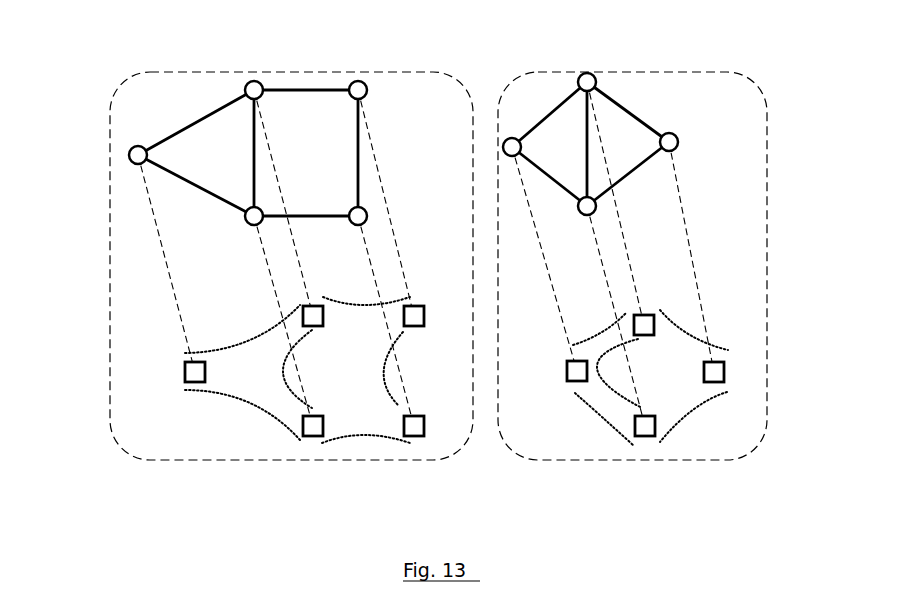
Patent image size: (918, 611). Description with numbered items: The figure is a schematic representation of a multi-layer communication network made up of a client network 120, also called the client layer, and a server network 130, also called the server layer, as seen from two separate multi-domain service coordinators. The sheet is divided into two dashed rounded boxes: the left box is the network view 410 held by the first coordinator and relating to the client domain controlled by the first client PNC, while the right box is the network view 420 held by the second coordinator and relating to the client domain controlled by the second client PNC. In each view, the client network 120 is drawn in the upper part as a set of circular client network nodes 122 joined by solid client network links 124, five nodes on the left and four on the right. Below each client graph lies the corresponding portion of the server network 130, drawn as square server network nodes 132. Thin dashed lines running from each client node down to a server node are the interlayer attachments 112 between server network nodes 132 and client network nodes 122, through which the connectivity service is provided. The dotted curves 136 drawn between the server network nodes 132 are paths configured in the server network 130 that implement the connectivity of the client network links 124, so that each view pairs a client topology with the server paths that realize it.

The interlayer attachments 112 is at (157, 223).
The client network 120 is at (433, 118).
The client network nodes 122 is at (250, 86).
The client network links 124 is at (178, 120).
The server network 130 is at (449, 385).
The server network nodes 132 is at (188, 372).
The paths configured in the server network 136 is at (265, 412).
The network view 410 is at (405, 100).
The network view 420 is at (738, 433).